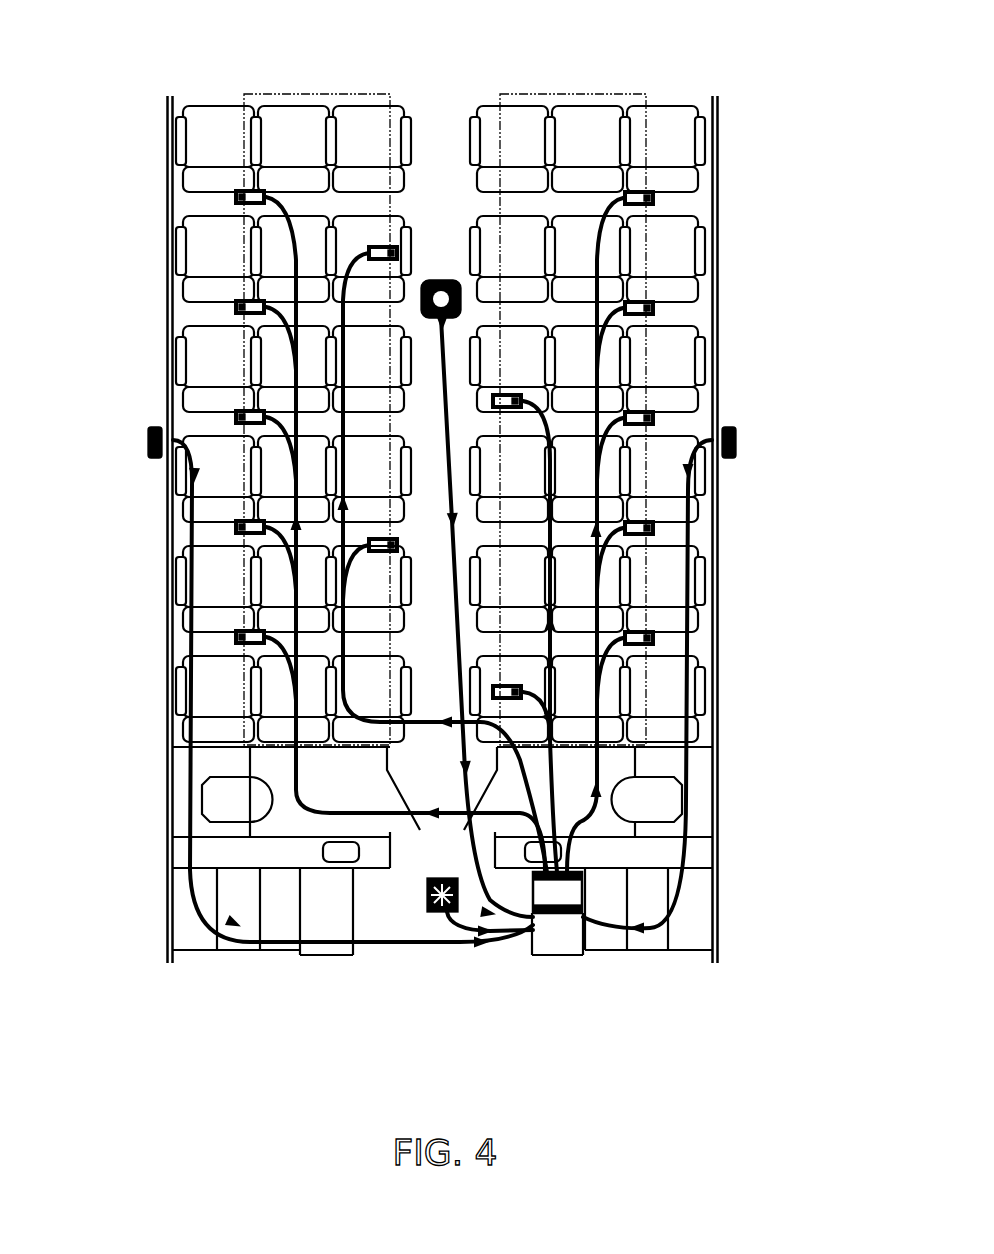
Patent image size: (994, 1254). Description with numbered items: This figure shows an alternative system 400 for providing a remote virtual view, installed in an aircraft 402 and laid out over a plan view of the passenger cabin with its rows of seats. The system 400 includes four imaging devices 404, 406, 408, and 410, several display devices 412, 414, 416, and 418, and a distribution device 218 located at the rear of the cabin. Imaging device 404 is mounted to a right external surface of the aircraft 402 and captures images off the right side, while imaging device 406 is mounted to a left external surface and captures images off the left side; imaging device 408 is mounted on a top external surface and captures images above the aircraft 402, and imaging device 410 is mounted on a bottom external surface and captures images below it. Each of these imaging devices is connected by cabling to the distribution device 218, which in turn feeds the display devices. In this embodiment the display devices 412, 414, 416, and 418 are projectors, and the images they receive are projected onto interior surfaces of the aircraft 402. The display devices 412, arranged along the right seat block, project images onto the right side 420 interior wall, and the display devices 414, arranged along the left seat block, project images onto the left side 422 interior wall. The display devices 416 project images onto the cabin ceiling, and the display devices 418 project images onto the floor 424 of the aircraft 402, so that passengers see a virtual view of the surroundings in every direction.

The system 400 is at (143, 50).
The aircraft 402 is at (717, 108).
The imaging device 404 is at (736, 430).
The imaging device 406 is at (148, 445).
The imaging device 408 is at (441, 280).
The imaging device 410 is at (433, 915).
The display devices 412 is at (654, 194).
The display devices 414 is at (236, 200).
The display devices 416 is at (523, 398).
The display devices 418 is at (368, 253).
The right side 420 is at (712, 957).
The left side 422 is at (167, 822).
The floor 424 is at (398, 905).
The distribution device 218 is at (565, 895).